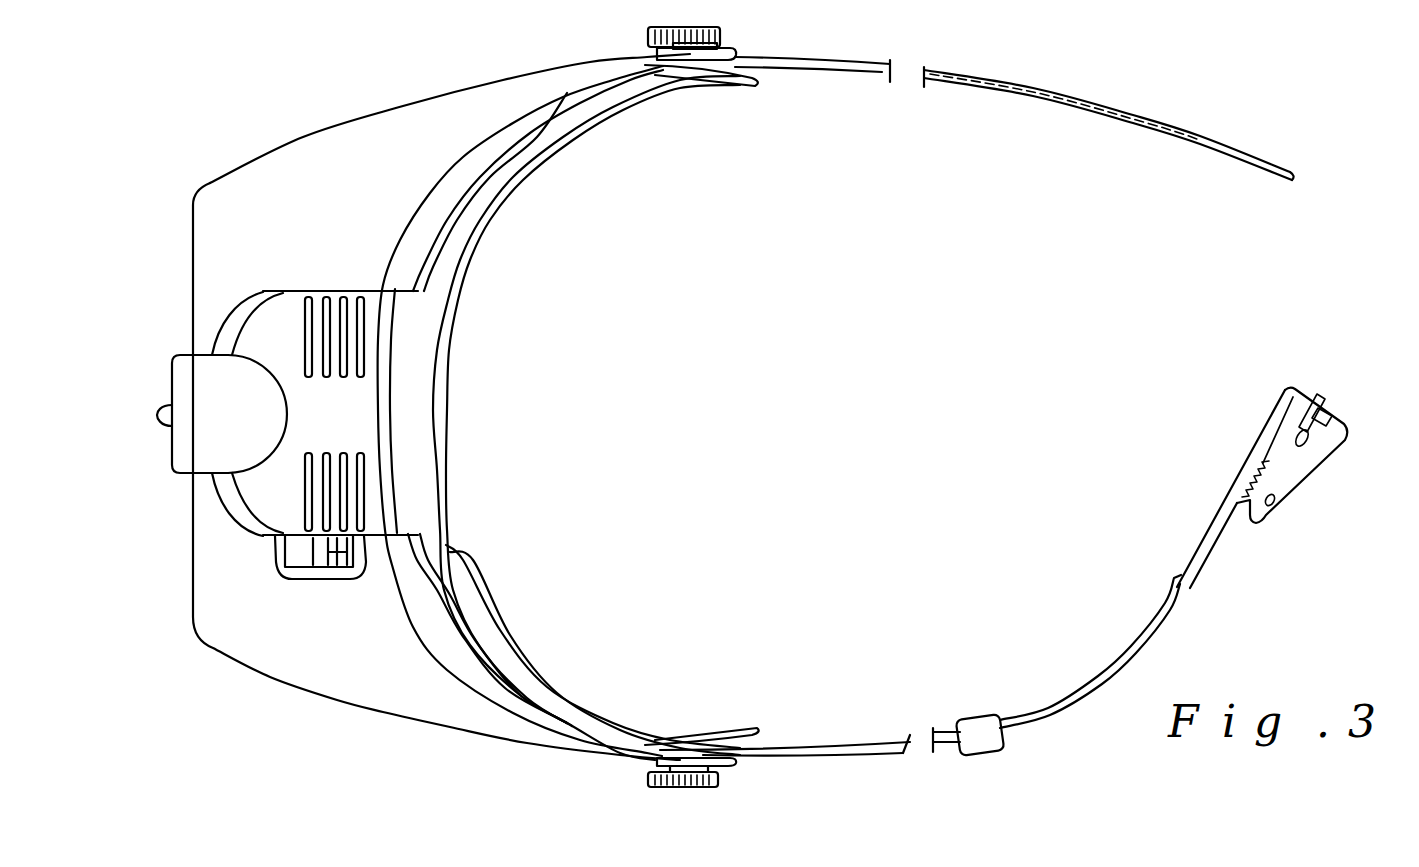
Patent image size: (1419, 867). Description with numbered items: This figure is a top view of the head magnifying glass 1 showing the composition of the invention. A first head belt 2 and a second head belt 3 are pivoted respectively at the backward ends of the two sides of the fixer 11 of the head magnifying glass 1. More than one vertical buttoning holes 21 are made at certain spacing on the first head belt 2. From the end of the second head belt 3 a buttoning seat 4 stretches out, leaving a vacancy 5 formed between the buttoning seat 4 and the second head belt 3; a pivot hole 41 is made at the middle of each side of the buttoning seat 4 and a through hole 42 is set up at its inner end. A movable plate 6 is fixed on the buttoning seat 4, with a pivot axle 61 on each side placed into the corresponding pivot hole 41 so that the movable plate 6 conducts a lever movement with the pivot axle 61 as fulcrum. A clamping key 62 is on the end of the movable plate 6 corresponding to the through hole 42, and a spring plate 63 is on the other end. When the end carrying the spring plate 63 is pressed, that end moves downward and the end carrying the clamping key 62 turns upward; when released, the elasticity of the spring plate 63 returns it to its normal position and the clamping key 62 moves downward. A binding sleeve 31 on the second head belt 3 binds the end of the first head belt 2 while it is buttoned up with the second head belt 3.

The head magnifying glass 1 is at (533, 760).
The fixer 11 is at (385, 695).
The first head belt 2 is at (978, 78).
The vertical buttoning holes 21 is at (1035, 90).
The second head belt 3 is at (1083, 687).
The binding sleeve 31 is at (987, 742).
The buttoning seat 4 is at (1233, 505).
The pivot hole 41 is at (1293, 460).
The through hole 42 is at (1283, 478).
The vacancy 5 is at (1307, 407).
The movable plate 6 is at (1320, 473).
The pivot axle 61 is at (1300, 433).
The clamping key 62 is at (1273, 493).
The spring plate 63 is at (1330, 412).